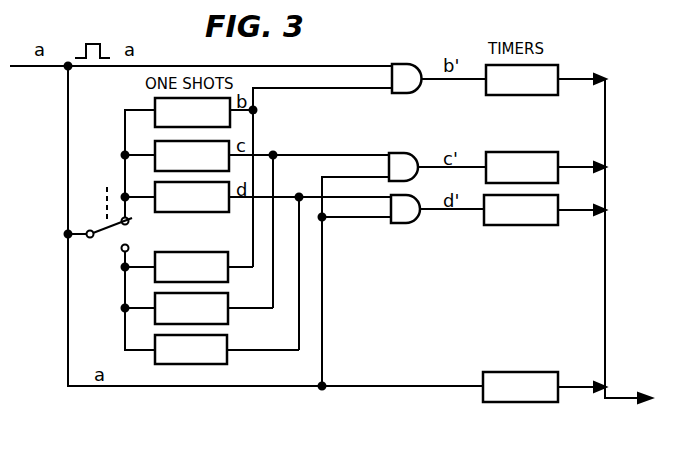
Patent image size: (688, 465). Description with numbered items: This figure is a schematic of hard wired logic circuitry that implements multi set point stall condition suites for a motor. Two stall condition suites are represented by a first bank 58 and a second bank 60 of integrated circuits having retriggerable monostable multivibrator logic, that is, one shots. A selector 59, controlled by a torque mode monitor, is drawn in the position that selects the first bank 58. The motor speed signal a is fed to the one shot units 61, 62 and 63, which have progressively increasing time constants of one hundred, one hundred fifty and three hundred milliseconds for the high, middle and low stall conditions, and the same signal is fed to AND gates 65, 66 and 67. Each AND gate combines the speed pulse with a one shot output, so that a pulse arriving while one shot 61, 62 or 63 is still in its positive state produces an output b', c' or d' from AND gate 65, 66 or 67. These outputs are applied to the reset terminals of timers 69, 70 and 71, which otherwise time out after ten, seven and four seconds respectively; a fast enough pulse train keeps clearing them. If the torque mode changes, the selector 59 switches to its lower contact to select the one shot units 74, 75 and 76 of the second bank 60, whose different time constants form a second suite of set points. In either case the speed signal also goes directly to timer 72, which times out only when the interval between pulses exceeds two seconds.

The first bank of integrated circuits 58 is at (106, 153).
The selector 59 is at (110, 240).
The second bank of integrated circuits 60 is at (110, 333).
The one shot unit 61 is at (155, 100).
The one shot unit 62 is at (160, 142).
The one shot unit 63 is at (160, 183).
The AND gate 65 is at (408, 70).
The AND gate 66 is at (405, 162).
The AND gate 67 is at (405, 225).
The timer 69 is at (517, 96).
The timer 70 is at (540, 152).
The timer 71 is at (518, 225).
The timer 72 is at (520, 372).
The one shot unit 74 is at (198, 252).
The one shot unit 75 is at (226, 294).
The one shot unit 76 is at (226, 336).